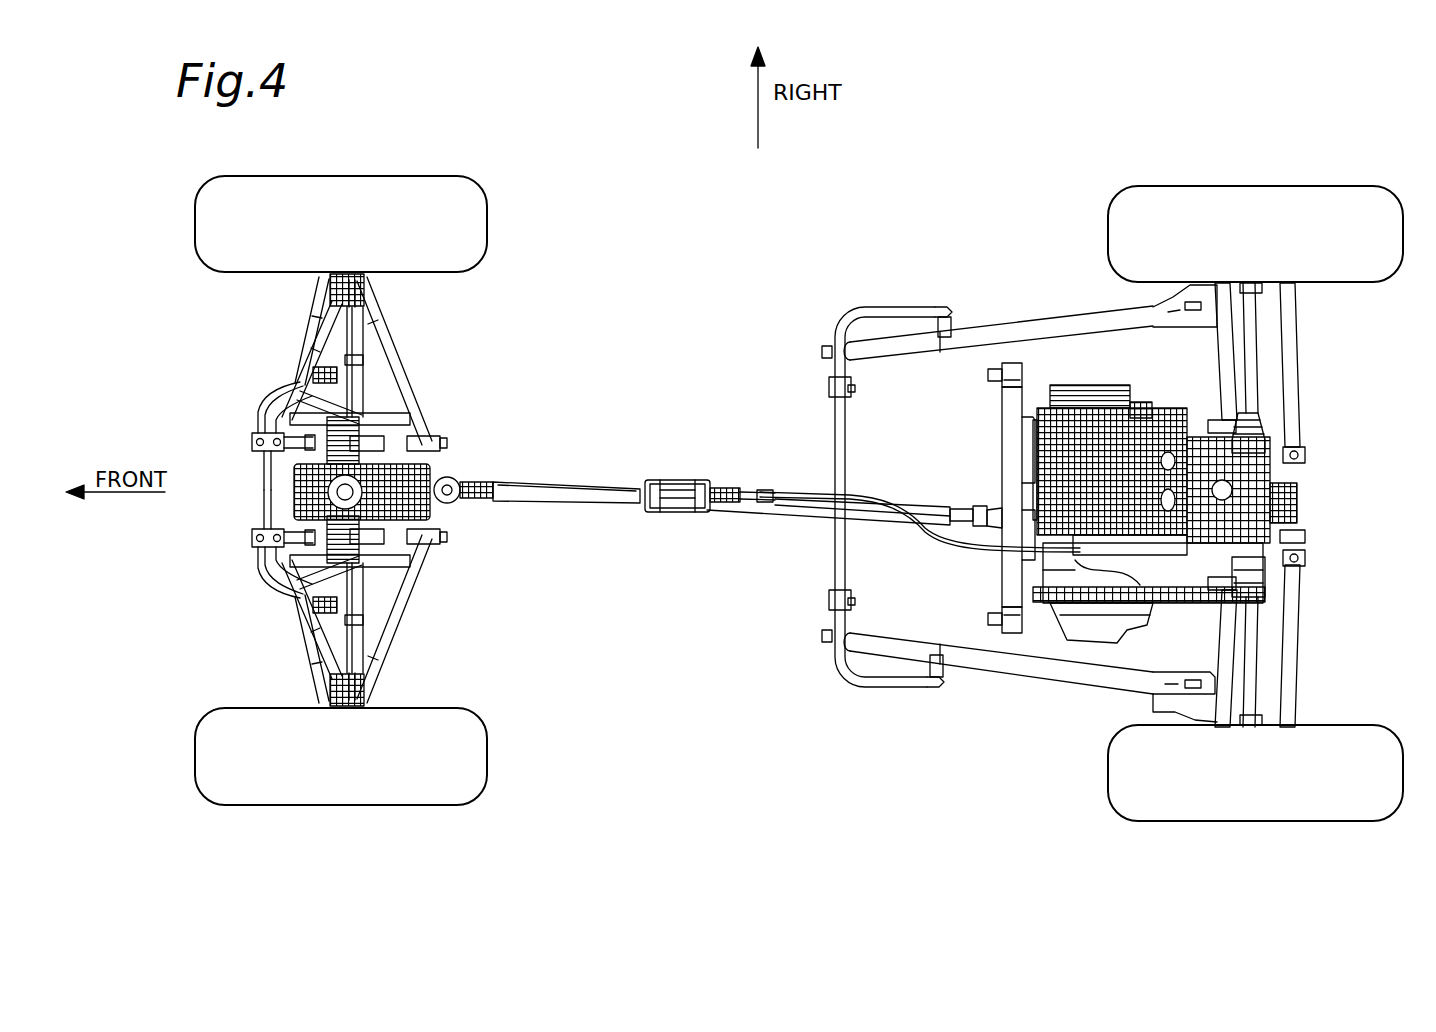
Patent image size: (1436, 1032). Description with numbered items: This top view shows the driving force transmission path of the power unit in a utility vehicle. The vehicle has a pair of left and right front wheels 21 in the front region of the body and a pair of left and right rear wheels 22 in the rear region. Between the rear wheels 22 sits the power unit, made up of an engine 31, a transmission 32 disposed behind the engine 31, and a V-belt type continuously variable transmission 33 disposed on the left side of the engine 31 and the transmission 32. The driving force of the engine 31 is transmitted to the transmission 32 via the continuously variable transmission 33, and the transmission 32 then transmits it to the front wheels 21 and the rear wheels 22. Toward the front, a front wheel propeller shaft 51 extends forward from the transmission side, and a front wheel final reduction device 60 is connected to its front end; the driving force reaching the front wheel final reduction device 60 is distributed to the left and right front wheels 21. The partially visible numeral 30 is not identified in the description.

The front wheels 21 is at (330, 196).
The rear wheels 22 is at (1246, 210).
The front wheel final reduction device 60 is at (407, 432).
The front wheel propeller shaft 51 is at (780, 508).
The engine 31 is at (1110, 482).
The transmission 32 is at (1300, 462).
The continuously variable transmission 33 is at (1162, 595).
The power unit 30 is at (1300, 588).